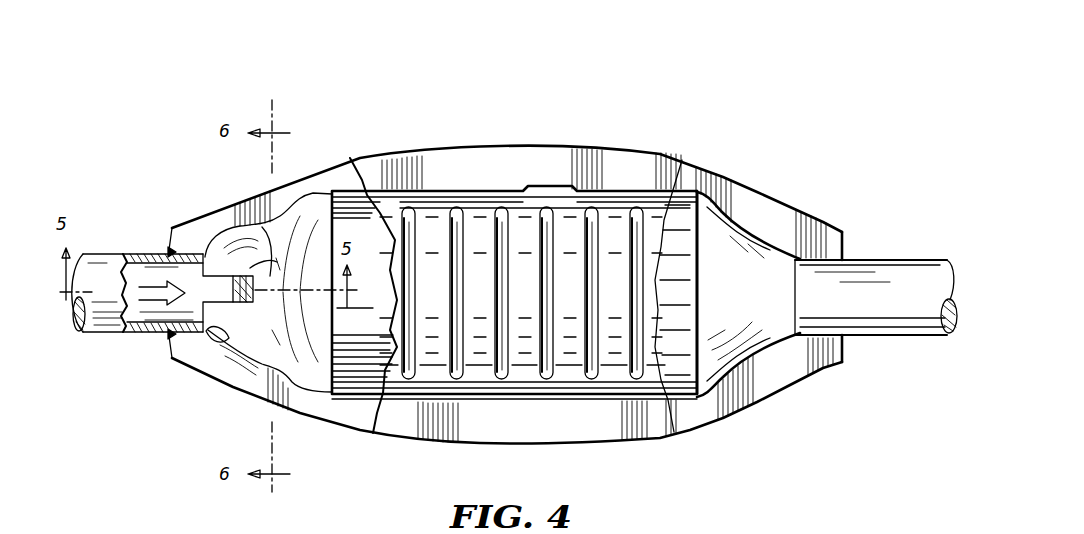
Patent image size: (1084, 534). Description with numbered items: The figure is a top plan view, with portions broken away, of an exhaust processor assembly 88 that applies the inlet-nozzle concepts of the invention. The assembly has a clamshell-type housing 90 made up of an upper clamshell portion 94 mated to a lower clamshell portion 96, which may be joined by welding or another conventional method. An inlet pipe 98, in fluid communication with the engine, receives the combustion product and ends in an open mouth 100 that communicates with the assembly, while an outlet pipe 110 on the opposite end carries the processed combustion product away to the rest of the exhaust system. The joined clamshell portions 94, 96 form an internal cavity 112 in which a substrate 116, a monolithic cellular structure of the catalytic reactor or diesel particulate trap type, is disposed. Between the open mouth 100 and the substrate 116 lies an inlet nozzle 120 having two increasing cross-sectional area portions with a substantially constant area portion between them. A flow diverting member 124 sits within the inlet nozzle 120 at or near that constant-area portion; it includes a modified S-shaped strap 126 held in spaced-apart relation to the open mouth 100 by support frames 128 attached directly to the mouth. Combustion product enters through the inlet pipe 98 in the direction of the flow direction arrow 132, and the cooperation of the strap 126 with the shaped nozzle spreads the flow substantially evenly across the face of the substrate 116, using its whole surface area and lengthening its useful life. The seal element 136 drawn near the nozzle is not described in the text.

The exhaust processor assembly 88 is at (573, 128).
The housing 90 is at (548, 432).
The upper clamshell portion 94 is at (640, 160).
The lower clamshell portion 96 is at (715, 172).
The inlet pipe 98 is at (138, 335).
The open mouth 100 is at (229, 338).
The outlet pipe 110 is at (902, 310).
The internal cavity 112 is at (357, 398).
The substrate 116 is at (351, 203).
The inlet nozzle 120 is at (311, 185).
The flow diverting member 124 is at (240, 314).
The strap 126 is at (263, 263).
The support frames 128 is at (216, 226).
The flow direction arrow 132 is at (148, 286).
The seal mat 136 is at (233, 243).